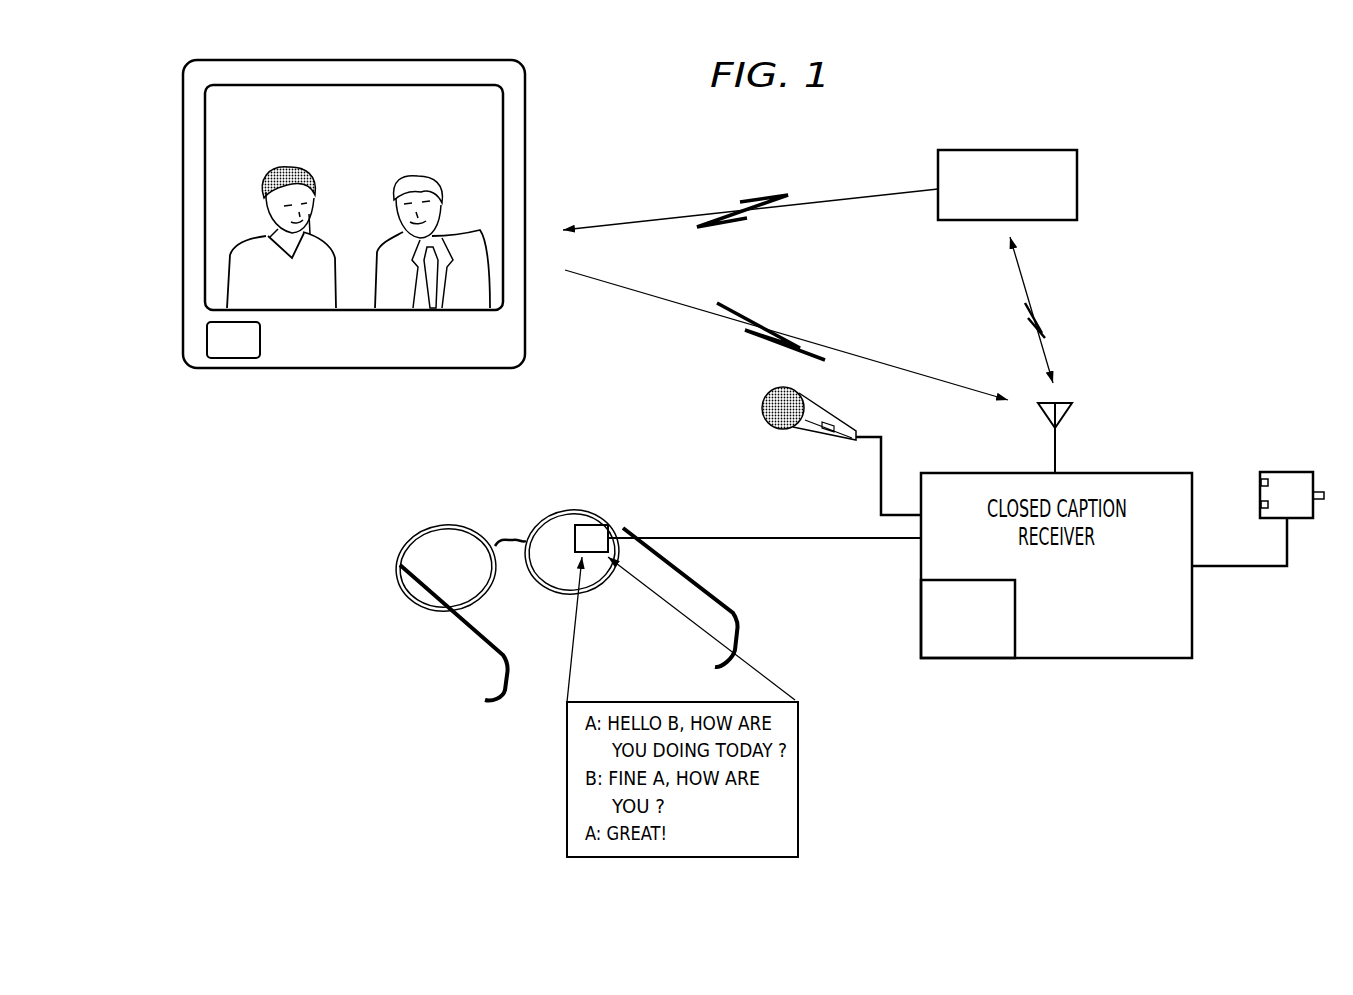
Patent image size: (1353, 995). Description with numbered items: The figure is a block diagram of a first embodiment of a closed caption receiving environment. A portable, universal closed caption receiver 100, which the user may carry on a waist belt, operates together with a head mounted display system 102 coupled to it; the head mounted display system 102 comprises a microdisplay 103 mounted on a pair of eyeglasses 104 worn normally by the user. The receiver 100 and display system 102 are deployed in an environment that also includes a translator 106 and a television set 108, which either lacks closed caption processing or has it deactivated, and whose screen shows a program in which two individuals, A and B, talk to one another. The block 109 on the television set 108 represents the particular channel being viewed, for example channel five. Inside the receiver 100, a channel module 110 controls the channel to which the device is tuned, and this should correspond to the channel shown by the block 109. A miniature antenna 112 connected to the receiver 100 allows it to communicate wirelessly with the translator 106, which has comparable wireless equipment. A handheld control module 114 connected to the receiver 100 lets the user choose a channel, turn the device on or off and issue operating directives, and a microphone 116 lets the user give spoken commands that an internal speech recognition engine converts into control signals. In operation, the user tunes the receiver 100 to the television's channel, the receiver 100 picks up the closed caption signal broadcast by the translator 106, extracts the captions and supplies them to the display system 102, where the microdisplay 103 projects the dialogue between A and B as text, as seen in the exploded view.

The closed caption receiving device 100 is at (1171, 692).
The head mounted display system 102 is at (555, 574).
The microdisplay 103 is at (590, 523).
The eyeglasses 104 is at (416, 536).
The translator 106 is at (1079, 186).
The television set 108 is at (391, 241).
The channel block 109 is at (233, 359).
The channel module 110 is at (1016, 618).
The miniature antenna 112 is at (1066, 415).
The control module 114 is at (1288, 472).
The microphone 116 is at (808, 432).